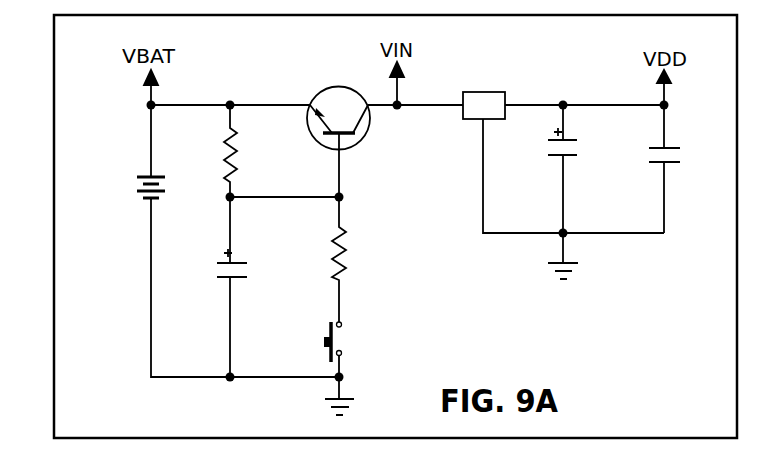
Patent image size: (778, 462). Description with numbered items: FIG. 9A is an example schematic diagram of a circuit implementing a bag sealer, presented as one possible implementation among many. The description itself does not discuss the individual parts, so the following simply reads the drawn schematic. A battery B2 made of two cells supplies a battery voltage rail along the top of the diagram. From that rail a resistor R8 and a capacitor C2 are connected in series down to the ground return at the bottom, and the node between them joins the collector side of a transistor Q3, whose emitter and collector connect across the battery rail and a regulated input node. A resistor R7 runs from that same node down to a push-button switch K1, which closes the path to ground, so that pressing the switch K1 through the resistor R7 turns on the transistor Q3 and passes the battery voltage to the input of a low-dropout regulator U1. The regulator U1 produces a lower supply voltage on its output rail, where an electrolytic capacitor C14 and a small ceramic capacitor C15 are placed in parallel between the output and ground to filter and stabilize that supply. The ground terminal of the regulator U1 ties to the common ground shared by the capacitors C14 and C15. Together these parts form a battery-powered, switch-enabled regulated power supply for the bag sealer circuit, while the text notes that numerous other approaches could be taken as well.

The battery (1.5V x2) B2 is at (113, 153).
The resistor 10k R8 is at (250, 151).
The capacitor 4.7uF C2 is at (253, 287).
The transistor Q3 is at (338, 129).
The resistor 470R R7 is at (368, 259).
The push-button switch K1 is at (347, 368).
The 2.4V LDO regulator U1 is at (548, 174).
The capacitor 220uF C14 is at (591, 169).
The capacitor 104 C15 is at (674, 169).